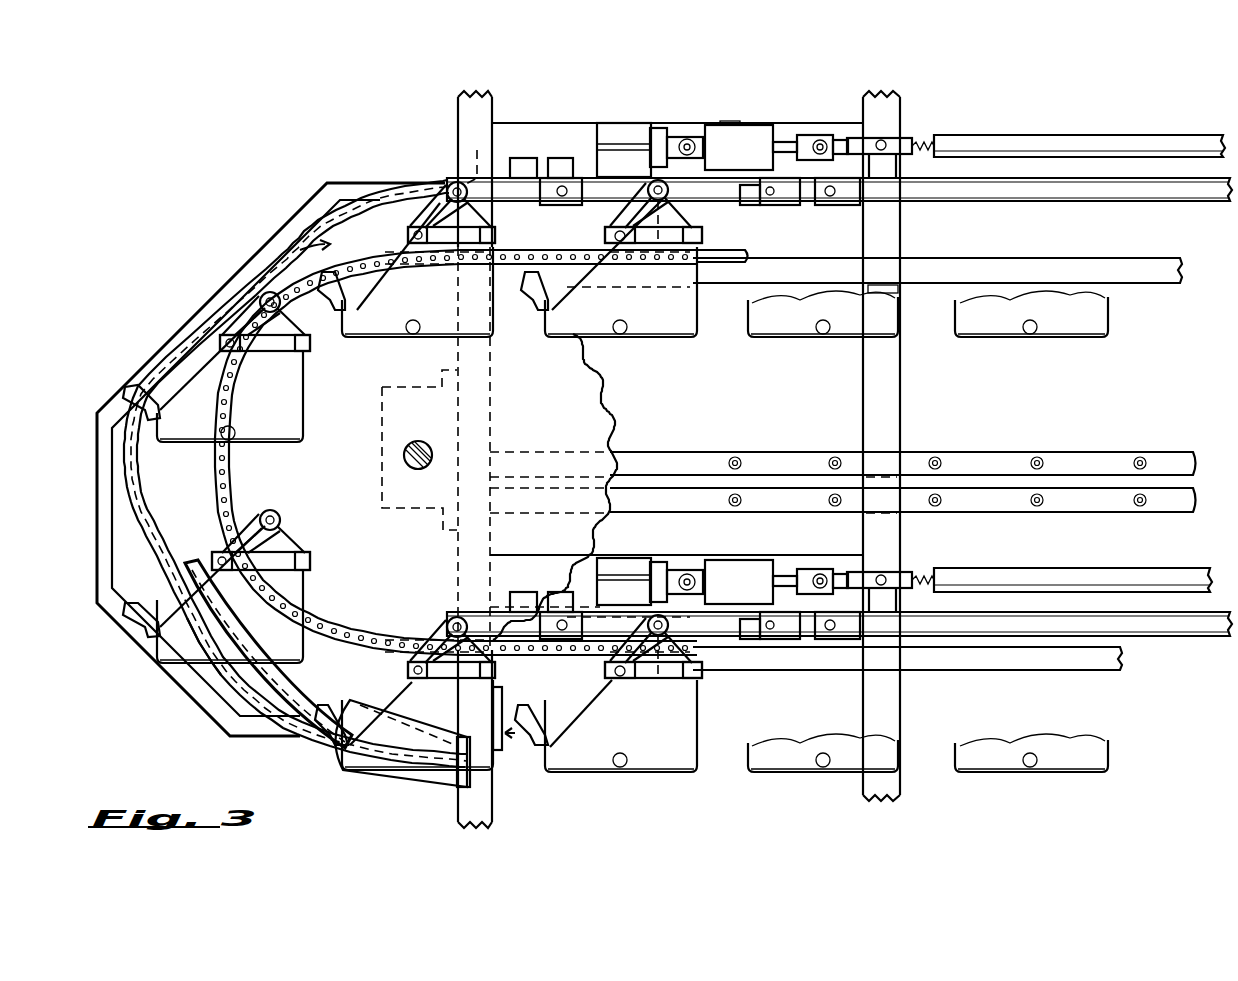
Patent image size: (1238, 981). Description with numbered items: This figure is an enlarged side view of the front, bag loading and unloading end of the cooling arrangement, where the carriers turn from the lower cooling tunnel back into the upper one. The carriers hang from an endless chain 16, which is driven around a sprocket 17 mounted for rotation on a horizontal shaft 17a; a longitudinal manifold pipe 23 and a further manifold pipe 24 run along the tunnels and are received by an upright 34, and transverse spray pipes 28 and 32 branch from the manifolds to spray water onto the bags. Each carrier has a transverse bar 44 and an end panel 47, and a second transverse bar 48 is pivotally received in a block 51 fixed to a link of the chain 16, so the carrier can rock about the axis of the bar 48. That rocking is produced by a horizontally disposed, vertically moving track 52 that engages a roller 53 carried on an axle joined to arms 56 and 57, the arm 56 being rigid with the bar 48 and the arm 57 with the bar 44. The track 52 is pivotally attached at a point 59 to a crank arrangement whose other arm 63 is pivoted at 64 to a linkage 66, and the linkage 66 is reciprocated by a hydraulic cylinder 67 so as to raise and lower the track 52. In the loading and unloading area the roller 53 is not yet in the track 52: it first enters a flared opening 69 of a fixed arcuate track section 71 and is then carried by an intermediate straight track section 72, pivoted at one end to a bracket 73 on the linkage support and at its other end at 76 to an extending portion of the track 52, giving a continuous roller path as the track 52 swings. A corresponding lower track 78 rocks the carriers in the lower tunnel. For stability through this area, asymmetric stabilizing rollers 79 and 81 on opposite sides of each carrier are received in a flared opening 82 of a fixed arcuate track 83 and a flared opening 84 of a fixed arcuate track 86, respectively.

The endless chain 16 is at (735, 249).
The sprocket 17 is at (617, 404).
The horizontal shaft 17a is at (400, 462).
The lower manifold pipe 23 is at (986, 455).
The longitudinal manifold pipe 24 is at (985, 510).
The lower spray pipe 28 is at (740, 460).
The transverse spray pipe 32 is at (830, 504).
The upright 34 is at (470, 126).
The transverse bar 44 is at (704, 240).
The end panel 47 is at (668, 762).
The second transverse bar 48 is at (605, 250).
The block 51 is at (600, 220).
The track 52 is at (1060, 204).
The roller 53 is at (424, 225).
The arm 56 is at (656, 672).
The arm 57 is at (700, 652).
The pivot point 59 is at (832, 196).
The crank arm 63 is at (885, 165).
The pivot 64 is at (888, 140).
The linkage 66 is at (1010, 148).
The hydraulic cylinder 67 is at (763, 115).
The flared opening 69 is at (284, 246).
The fixed arcuate track section 71 is at (367, 190).
The intermediate straight track section 72 is at (765, 203).
The bracket 73 is at (561, 158).
The pivot 76 is at (764, 188).
The lower track 78 is at (1175, 640).
The stabilizing roller 79 is at (523, 712).
The stabilizing roller 81 is at (650, 745).
The flared opening 82 is at (510, 740).
The fixed arcuate track 83 is at (212, 702).
The flared opening 84 is at (470, 790).
The fixed arcuate track 86 is at (185, 580).